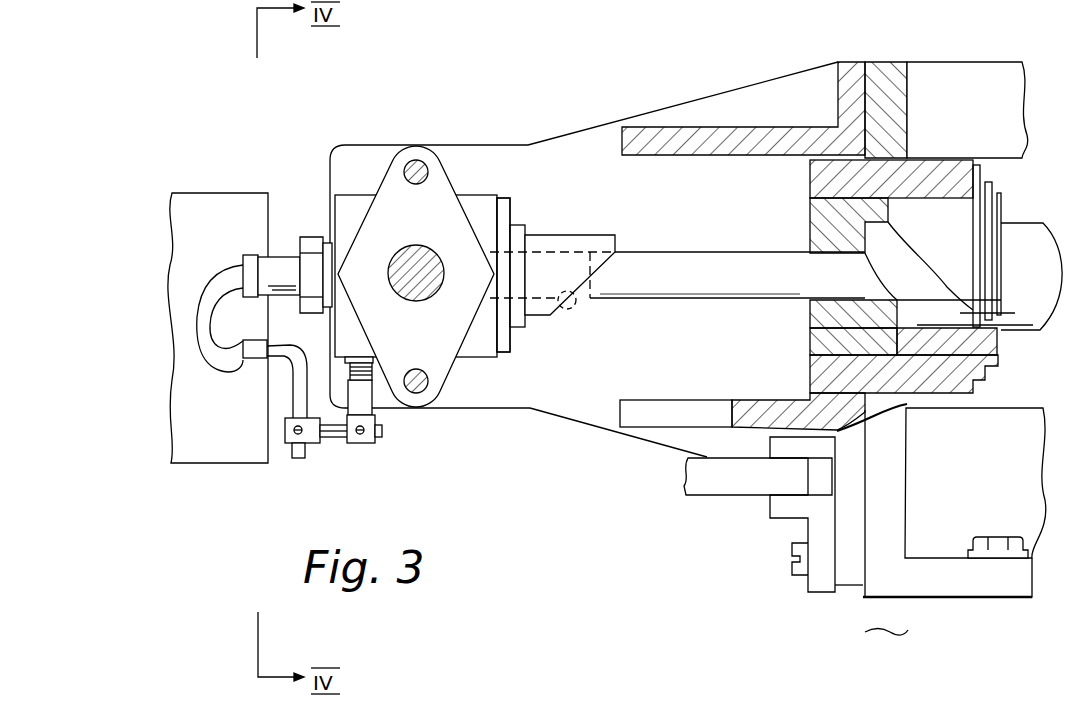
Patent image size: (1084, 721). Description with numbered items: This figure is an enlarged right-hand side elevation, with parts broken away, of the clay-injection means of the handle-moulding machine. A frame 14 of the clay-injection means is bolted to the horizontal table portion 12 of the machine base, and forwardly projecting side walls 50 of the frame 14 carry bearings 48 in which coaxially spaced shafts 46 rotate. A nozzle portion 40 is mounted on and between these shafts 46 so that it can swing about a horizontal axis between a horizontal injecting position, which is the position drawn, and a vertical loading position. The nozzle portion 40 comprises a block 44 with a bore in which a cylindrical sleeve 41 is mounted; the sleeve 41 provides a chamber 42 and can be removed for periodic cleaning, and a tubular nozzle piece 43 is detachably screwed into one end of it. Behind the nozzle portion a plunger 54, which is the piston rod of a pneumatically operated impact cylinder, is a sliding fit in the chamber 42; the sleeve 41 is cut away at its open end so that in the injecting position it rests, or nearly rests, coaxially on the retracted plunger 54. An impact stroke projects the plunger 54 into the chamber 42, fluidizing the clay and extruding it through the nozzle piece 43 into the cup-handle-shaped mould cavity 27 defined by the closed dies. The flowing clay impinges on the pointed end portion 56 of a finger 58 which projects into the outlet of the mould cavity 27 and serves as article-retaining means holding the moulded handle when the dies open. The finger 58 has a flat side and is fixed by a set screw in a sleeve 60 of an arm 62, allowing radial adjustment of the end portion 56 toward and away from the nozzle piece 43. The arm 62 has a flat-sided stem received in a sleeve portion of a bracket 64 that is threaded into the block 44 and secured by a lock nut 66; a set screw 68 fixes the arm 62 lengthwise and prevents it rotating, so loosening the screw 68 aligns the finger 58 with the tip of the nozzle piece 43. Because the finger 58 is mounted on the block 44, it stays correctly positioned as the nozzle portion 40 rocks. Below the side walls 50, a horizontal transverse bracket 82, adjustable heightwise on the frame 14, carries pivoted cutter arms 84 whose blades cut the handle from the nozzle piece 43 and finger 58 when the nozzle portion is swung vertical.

The table portion 12 is at (877, 616).
The frame 14 is at (976, 76).
The mould cavity 27 is at (200, 337).
The nozzle portion 40 is at (524, 192).
The cylindrical sleeve 41 is at (586, 246).
The chamber 42 is at (573, 294).
The tubular nozzle piece 43 is at (263, 262).
The block 44 is at (480, 204).
The shafts 46 is at (427, 297).
The bearings 48 is at (366, 246).
The side walls 50 is at (748, 112).
The plunger 54 is at (660, 293).
The pointed end portion 56 is at (264, 366).
The finger 58 is at (287, 408).
The sleeve 60 is at (310, 441).
The arm 62 is at (333, 441).
The bracket 64 is at (370, 397).
The lock nut 66 is at (366, 364).
The set screw 68 is at (362, 436).
The bracket 82 is at (813, 531).
The cutter arms 84 is at (712, 485).